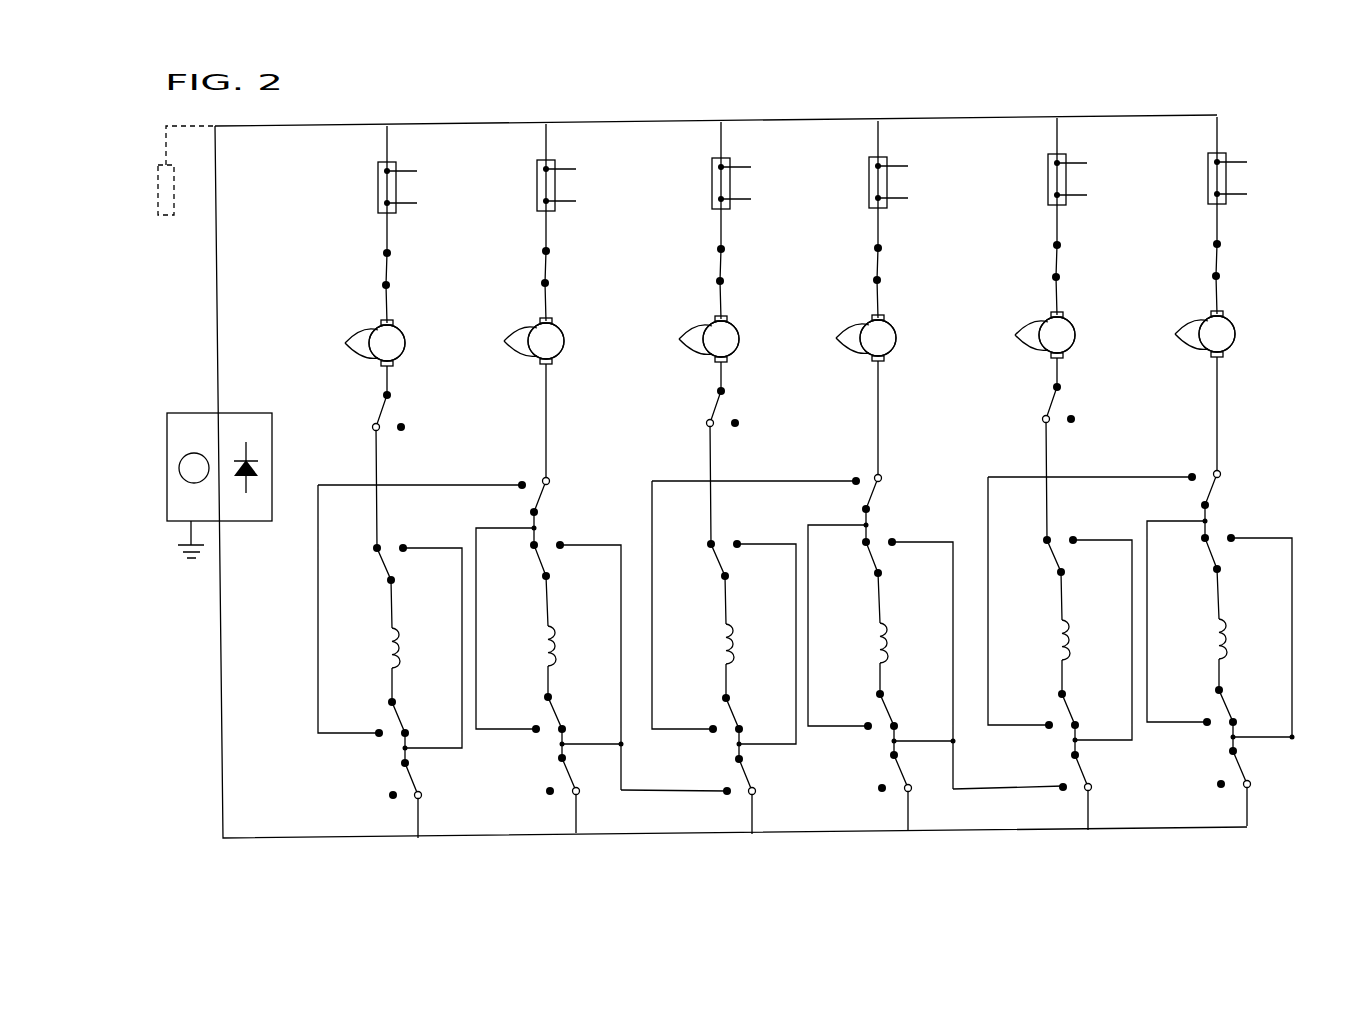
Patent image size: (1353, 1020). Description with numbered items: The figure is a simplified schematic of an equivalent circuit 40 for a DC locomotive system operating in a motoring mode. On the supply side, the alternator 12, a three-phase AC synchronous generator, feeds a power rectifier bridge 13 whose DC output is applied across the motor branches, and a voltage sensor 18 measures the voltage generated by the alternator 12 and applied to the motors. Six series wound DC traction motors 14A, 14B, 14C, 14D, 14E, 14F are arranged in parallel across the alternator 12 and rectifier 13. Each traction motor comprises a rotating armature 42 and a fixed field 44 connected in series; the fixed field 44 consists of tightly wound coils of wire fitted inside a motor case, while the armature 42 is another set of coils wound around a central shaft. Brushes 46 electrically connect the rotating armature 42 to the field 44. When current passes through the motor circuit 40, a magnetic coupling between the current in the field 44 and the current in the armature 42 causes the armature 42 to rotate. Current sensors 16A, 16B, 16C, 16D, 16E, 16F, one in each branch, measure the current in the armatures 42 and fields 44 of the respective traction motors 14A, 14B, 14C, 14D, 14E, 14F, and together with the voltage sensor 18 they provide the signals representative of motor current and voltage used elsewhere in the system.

The equivalent circuit 40 is at (1080, 95).
The voltage sensor 18 is at (158, 195).
The alternator 12 is at (167, 470).
The power rectifier bridge 13 is at (167, 443).
The current sensor 16A is at (360, 179).
The current sensor 16B is at (519, 177).
The current sensor 16C is at (694, 175).
The current sensor 16D is at (851, 174).
The current sensor 16E is at (1030, 171).
The current sensor 16F is at (1190, 170).
The DC traction motor 14A is at (412, 357).
The DC traction motor 14B is at (571, 355).
The DC traction motor 14C is at (746, 353).
The DC traction motor 14D is at (904, 352).
The DC traction motor 14E is at (1082, 349).
The DC traction motor 14F is at (1241, 348).
The rotating armature 42 is at (839, 321).
The brushes 46 is at (759, 339).
The fixed field 44 is at (837, 625).